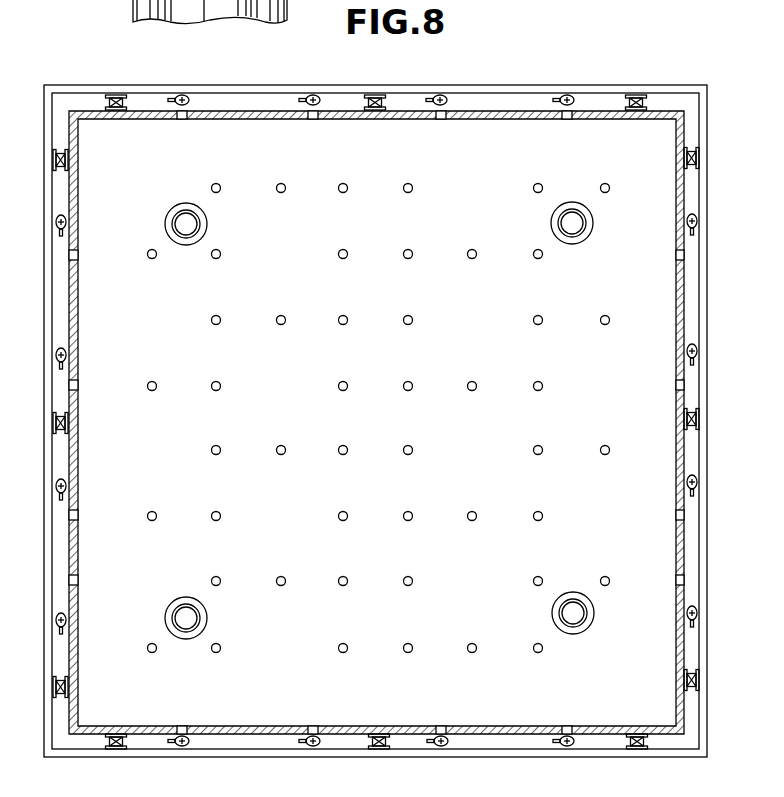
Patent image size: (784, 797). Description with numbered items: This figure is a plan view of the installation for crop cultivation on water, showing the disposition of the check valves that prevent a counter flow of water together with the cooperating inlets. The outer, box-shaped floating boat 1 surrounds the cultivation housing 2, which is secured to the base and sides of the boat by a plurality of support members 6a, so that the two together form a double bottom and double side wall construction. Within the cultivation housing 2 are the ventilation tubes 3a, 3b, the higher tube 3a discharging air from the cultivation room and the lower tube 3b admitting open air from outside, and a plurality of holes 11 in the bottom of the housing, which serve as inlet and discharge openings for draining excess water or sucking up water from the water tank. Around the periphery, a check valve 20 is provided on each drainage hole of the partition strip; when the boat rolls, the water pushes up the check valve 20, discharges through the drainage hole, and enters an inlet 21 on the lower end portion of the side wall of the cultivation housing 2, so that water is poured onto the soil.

The floating boat 1 is at (276, 93).
The cultivation housing 2 is at (250, 112).
The ventilation tube 3a is at (186, 203).
The ventilation tube 3b is at (572, 202).
The support member 6a is at (648, 96).
The hole 11 is at (346, 183).
The check valve 20 is at (444, 97).
The inlet 21 is at (682, 255).